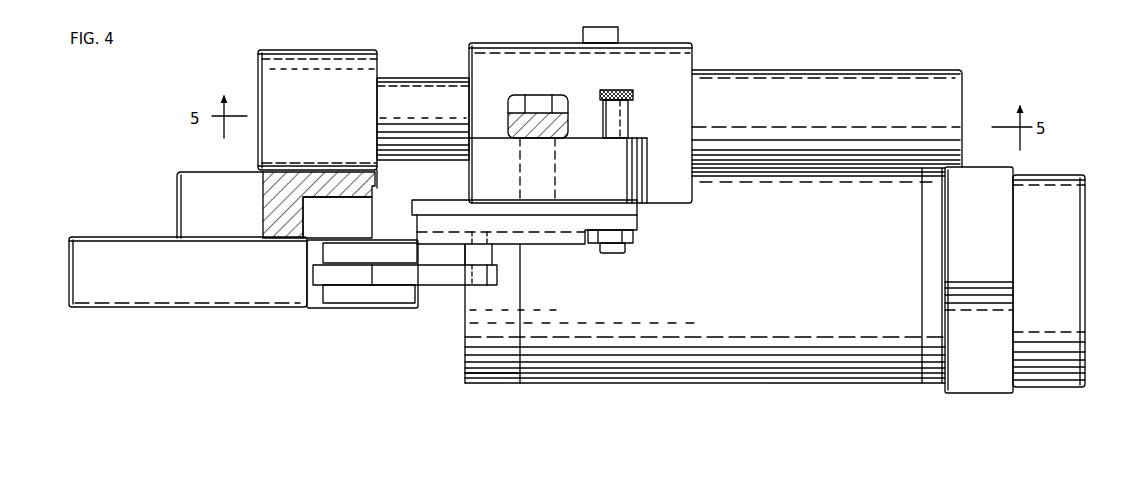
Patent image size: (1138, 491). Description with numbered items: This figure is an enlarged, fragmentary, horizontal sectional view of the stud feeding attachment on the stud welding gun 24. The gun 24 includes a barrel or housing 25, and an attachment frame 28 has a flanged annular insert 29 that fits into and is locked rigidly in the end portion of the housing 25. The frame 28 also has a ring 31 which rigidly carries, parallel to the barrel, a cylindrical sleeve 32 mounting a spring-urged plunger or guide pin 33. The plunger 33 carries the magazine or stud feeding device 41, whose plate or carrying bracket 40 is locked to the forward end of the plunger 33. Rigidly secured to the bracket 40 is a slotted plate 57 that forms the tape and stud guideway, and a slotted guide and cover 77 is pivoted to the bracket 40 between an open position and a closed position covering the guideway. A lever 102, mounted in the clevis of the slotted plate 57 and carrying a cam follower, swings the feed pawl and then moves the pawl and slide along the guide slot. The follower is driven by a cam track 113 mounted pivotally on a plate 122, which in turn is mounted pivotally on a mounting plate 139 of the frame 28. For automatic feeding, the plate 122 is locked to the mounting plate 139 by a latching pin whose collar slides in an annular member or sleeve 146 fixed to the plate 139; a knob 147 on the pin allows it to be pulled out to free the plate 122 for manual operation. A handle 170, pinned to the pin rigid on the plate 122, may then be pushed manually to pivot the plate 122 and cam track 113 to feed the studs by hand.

The stud welding gun 24 is at (817, 394).
The barrel or housing 25 is at (713, 372).
The attachment frame 28 is at (480, 389).
The flanged annular insert 29 is at (465, 373).
The ring 31 is at (485, 46).
The cylindrical sleeve 32 is at (812, 72).
The plunger or guide pin 33 is at (412, 66).
The plate or carrying bracket 40 is at (302, 55).
The magazine or stud feeding device 41 is at (254, 60).
The slotted plate 57 is at (350, 296).
The slotted guide and cover 77 is at (110, 247).
The lever 102 is at (450, 290).
The cam track 113 is at (555, 245).
The plate 122 is at (632, 210).
The mounting plate 139 is at (637, 138).
The annular member or sleeve 146 is at (612, 122).
The knob 147 is at (615, 93).
The handle 170 is at (572, 118).